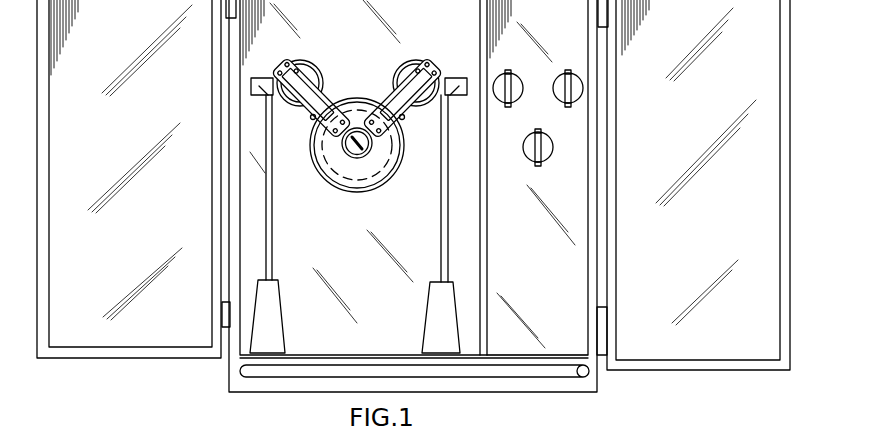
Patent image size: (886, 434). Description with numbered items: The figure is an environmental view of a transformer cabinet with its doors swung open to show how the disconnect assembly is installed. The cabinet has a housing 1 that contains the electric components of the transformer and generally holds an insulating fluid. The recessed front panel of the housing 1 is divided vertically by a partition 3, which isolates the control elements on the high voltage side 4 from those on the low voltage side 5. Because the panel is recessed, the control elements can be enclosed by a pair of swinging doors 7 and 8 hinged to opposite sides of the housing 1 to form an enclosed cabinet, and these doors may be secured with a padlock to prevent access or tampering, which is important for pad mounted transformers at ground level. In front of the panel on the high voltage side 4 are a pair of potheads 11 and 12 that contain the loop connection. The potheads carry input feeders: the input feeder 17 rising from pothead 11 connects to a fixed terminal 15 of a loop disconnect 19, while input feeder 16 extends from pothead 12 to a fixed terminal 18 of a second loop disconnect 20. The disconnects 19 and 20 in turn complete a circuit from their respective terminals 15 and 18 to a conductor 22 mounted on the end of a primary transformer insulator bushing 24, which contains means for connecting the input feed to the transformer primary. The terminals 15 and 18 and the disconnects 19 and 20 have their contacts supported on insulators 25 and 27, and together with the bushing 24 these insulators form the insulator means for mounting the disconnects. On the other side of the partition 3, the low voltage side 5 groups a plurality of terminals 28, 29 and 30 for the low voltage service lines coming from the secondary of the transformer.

The housing 1 is at (203, 381).
The partition 3 is at (480, 26).
The high voltage side 4 is at (361, 125).
The low voltage side 5 is at (543, 272).
The swinging door 7 is at (108, 52).
The swinging door 8 is at (716, 90).
The pothead 11 is at (280, 323).
The pothead 12 is at (435, 315).
The fixed terminal 15 is at (255, 77).
The input feeder 16 is at (441, 243).
The left rod 17 is at (272, 250).
The fixed terminal 18 is at (455, 79).
The loop disconnect 19 is at (337, 83).
The loop disconnect 20 is at (386, 75).
The conductor 22 is at (355, 180).
The primary transformer insulator bushing 24 is at (377, 190).
The insulator 25 is at (310, 62).
The insulator 27 is at (412, 60).
The terminal 28 is at (510, 72).
The terminal 29 is at (563, 102).
The terminal 30 is at (533, 160).